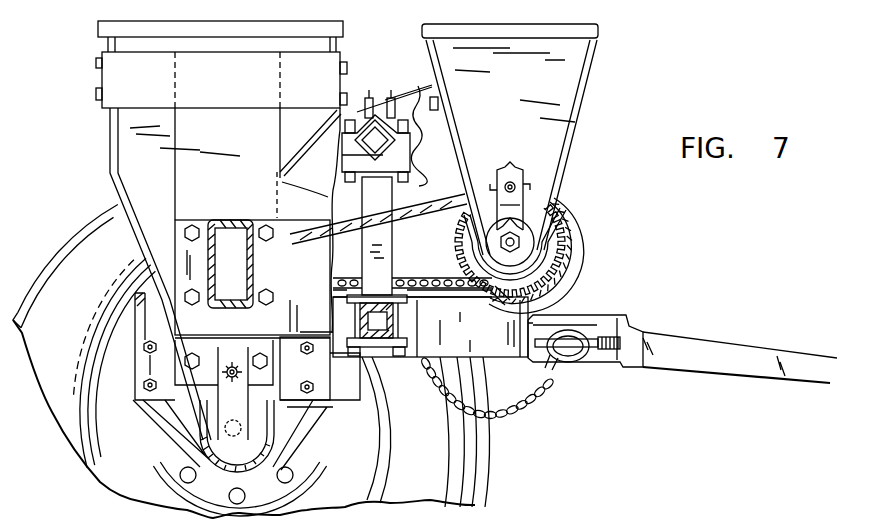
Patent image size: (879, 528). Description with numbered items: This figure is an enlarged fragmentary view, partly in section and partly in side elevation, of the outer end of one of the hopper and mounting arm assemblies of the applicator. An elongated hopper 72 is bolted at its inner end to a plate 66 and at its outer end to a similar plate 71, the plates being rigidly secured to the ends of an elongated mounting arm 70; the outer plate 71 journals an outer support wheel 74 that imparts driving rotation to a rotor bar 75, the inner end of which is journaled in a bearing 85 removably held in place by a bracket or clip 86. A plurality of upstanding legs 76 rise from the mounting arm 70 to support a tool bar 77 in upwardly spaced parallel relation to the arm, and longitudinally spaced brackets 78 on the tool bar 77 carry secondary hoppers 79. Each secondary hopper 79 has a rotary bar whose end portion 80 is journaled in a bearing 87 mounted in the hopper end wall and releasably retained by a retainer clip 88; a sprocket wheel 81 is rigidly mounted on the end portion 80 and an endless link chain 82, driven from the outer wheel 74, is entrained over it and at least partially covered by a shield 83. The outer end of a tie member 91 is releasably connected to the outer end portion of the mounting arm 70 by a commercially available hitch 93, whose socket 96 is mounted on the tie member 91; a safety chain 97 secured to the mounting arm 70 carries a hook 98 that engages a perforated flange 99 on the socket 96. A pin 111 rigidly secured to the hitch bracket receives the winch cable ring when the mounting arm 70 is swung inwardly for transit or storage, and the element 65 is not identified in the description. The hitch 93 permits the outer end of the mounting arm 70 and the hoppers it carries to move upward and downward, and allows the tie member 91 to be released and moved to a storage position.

The square tube 65 is at (232, 222).
The plate 66 is at (285, 274).
The mounting arm 70 is at (383, 360).
The plate 71 is at (128, 368).
The hopper 72 is at (128, 133).
The outer support wheel 74 is at (60, 427).
The rotor bar 75 is at (187, 443).
The upstanding leg 76 is at (372, 258).
The tool bar 77 is at (342, 159).
The bracket 78 is at (415, 120).
The secondary hopper 79 is at (565, 86).
The rotary bar end portion 80 is at (550, 262).
The sprocket wheel 81 is at (553, 277).
The endless link chain 82 is at (566, 250).
The shield 83 is at (440, 243).
The bearing 85 is at (223, 460).
The bracket or clip 86 is at (233, 350).
The bearing 87 is at (527, 247).
The retainer clip 88 is at (528, 160).
The tie member 91 is at (770, 360).
The hitch 93 is at (644, 315).
The socket 96 is at (540, 352).
The safety chain 97 is at (520, 418).
The hook 98 is at (579, 370).
The perforated flange 99 is at (613, 352).
The pin 111 is at (501, 328).